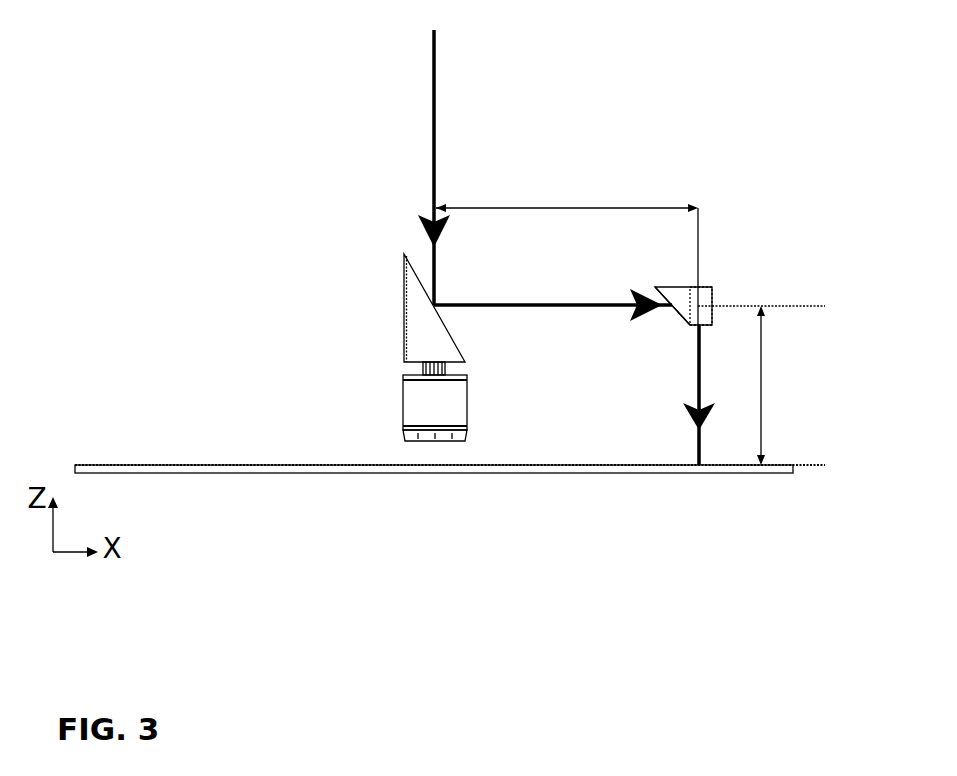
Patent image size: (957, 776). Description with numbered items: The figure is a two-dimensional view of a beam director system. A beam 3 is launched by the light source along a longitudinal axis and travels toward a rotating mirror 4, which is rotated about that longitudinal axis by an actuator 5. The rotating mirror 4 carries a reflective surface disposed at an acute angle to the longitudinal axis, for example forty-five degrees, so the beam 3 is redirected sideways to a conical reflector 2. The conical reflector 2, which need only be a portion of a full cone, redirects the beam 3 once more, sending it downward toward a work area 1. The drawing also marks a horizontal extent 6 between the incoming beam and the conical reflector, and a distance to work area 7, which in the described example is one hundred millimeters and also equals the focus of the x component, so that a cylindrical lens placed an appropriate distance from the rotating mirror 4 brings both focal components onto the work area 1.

The work area 1 is at (220, 465).
The conical reflector 2 is at (678, 283).
The beam 3 is at (432, 172).
The rotating mirror 4 is at (400, 322).
The actuator 5 is at (403, 408).
The horizontal distance 6 is at (593, 208).
The distance to work area 7 is at (761, 390).